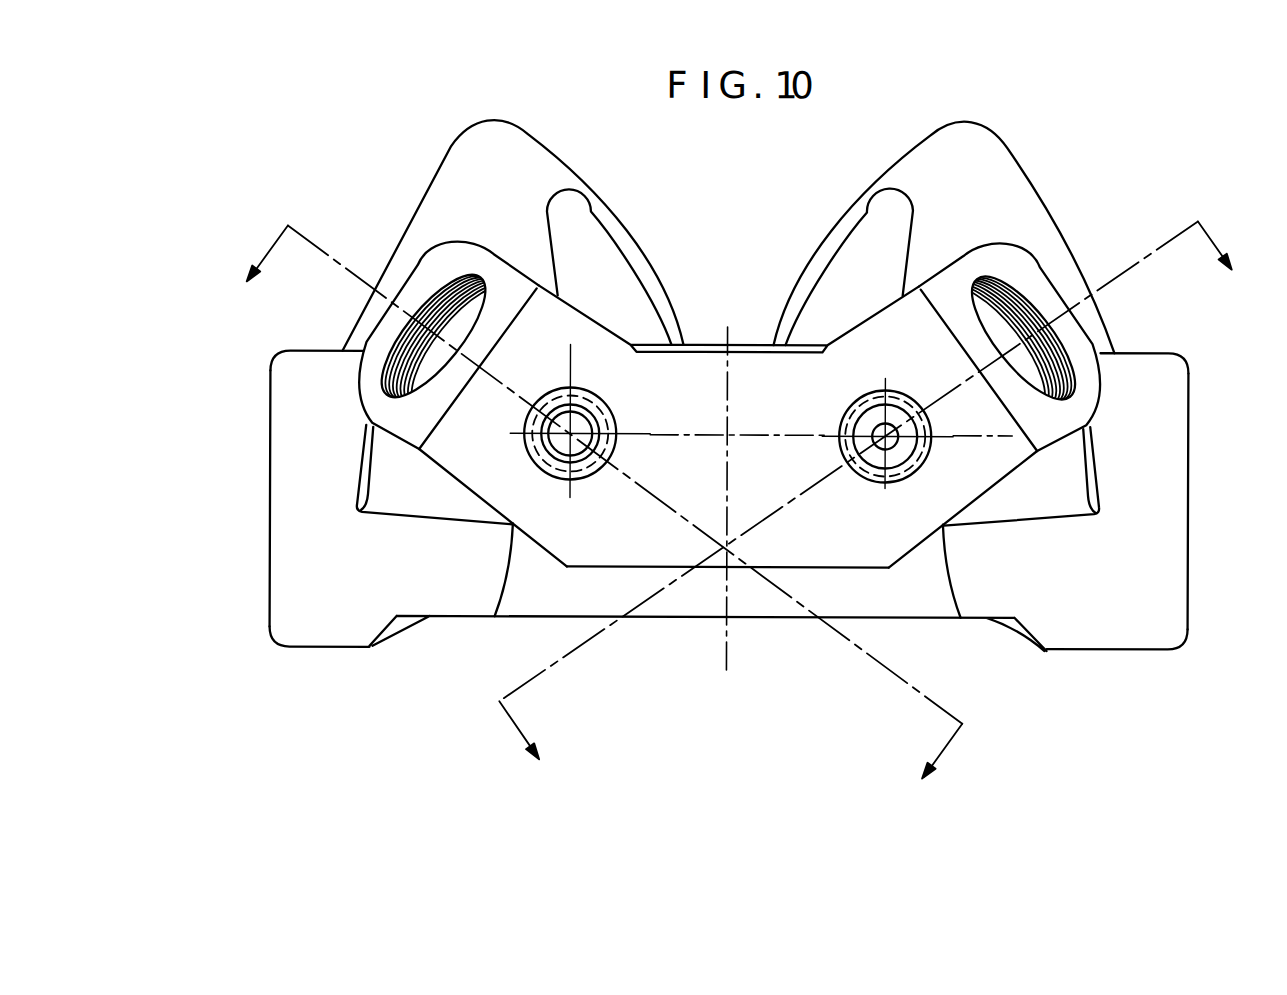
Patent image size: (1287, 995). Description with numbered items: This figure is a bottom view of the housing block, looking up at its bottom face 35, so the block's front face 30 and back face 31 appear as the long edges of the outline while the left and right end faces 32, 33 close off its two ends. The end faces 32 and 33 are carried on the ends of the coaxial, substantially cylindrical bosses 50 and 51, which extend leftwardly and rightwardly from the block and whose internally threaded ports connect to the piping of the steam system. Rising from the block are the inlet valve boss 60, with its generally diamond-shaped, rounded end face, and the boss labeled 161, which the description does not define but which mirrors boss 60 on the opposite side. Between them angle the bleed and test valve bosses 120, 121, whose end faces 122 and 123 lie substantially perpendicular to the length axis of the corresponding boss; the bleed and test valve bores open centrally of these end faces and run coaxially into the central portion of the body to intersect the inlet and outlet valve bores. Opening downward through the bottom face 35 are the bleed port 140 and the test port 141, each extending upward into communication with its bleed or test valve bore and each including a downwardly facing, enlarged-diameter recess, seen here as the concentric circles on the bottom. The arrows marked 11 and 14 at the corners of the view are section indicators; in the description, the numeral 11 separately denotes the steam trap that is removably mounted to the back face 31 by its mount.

The steam trap 11 is at (610, 500).
The section line 14- 14 is at (855, 480).
The front face 30 is at (754, 340).
The back face 31 is at (477, 618).
The left end face 32 is at (270, 588).
The right end face 33 is at (1187, 615).
The bottom face 35 is at (798, 404).
The leftwardly extending boss 50 is at (282, 615).
The rightwardly extending boss 51 is at (1170, 637).
The inlet valve boss 60 is at (513, 236).
The right mounting ear 161 is at (944, 237).
The bleed valve boss 120 is at (505, 262).
The test valve boss 121 is at (1026, 252).
The end face of bleed valve boss 122 is at (447, 246).
The end face of test valve boss 123 is at (965, 252).
The bleed port 140 is at (588, 400).
The test port 141 is at (893, 398).